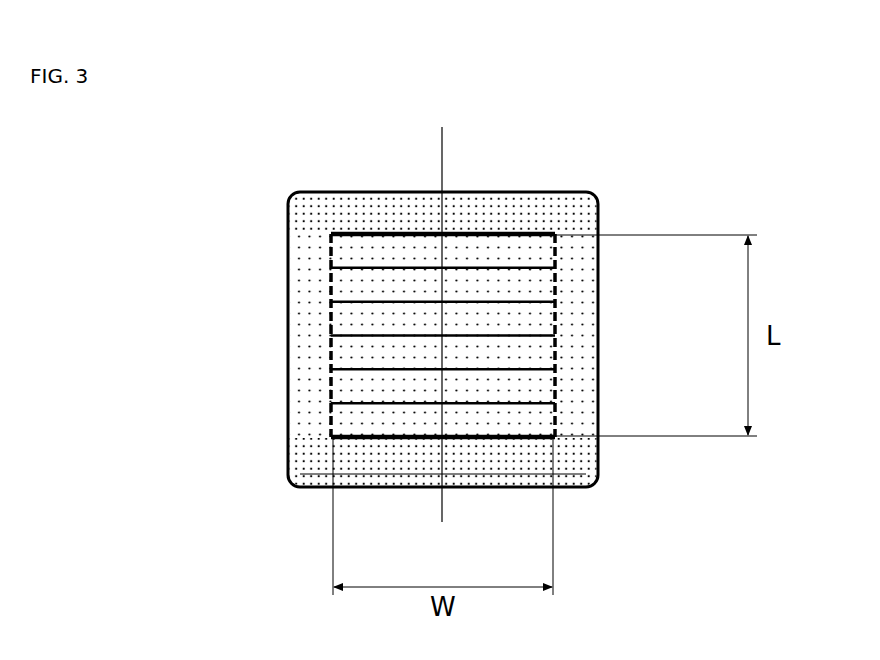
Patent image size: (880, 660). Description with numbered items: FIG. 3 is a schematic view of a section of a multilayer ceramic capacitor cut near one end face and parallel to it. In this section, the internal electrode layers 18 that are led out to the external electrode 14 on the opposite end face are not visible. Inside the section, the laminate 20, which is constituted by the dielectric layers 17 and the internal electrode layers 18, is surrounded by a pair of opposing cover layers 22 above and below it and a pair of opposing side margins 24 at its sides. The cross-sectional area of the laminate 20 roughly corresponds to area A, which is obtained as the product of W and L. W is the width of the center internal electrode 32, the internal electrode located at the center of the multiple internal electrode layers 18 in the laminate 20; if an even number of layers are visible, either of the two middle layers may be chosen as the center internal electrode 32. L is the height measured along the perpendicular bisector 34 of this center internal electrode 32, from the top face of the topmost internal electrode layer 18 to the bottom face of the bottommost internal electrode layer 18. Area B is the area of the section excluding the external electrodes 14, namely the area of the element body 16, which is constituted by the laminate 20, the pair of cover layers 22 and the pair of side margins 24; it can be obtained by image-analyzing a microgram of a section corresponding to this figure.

The external electrode 14 is at (498, 480).
The element body 16 is at (598, 218).
The dielectric layers 17 is at (350, 285).
The internal electrode layers 18 is at (350, 263).
The laminate 20 is at (290, 329).
The cover layers 22 is at (369, 478).
The side margins 24 is at (300, 407).
The center internal electrode 32 is at (332, 338).
The perpendicular bisector 34 is at (443, 157).